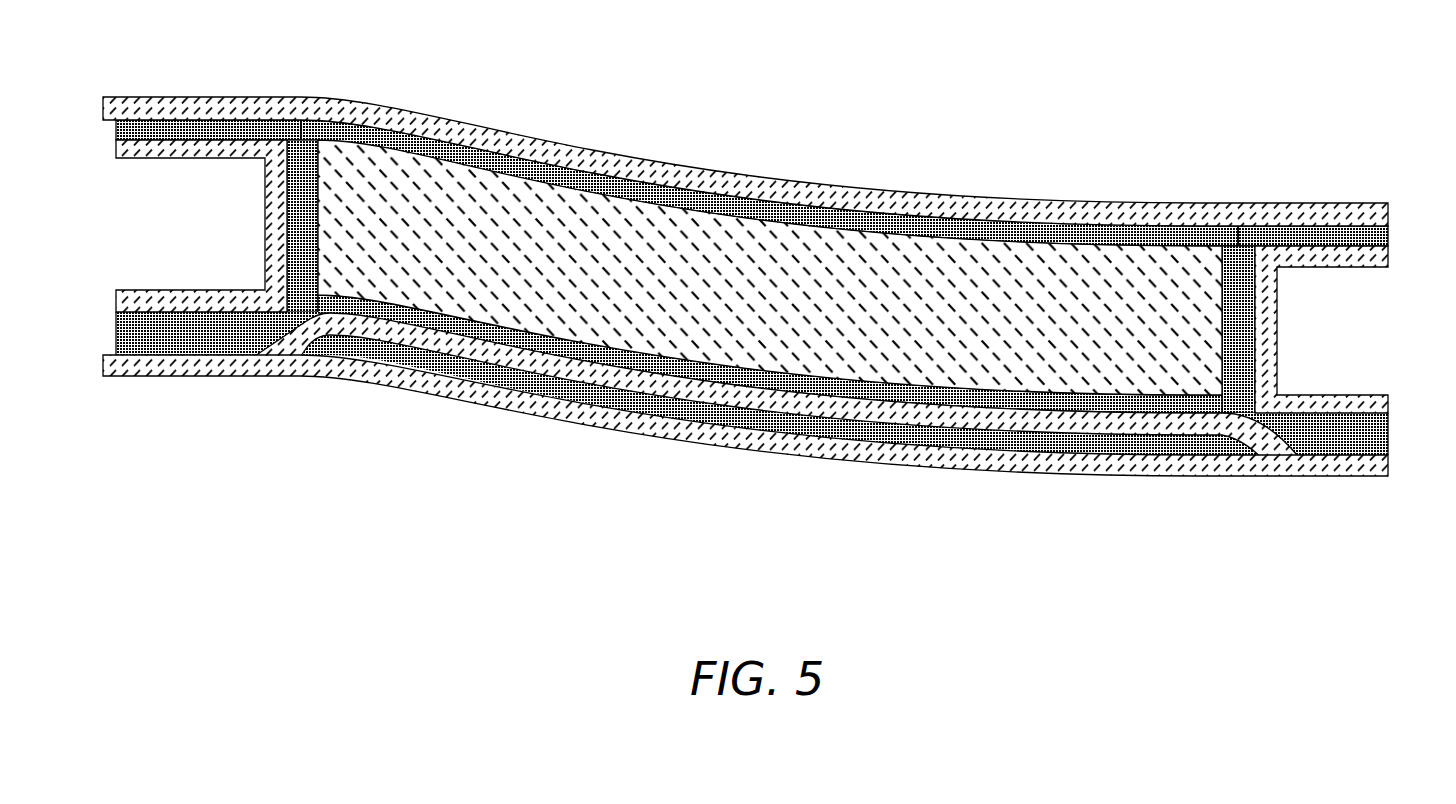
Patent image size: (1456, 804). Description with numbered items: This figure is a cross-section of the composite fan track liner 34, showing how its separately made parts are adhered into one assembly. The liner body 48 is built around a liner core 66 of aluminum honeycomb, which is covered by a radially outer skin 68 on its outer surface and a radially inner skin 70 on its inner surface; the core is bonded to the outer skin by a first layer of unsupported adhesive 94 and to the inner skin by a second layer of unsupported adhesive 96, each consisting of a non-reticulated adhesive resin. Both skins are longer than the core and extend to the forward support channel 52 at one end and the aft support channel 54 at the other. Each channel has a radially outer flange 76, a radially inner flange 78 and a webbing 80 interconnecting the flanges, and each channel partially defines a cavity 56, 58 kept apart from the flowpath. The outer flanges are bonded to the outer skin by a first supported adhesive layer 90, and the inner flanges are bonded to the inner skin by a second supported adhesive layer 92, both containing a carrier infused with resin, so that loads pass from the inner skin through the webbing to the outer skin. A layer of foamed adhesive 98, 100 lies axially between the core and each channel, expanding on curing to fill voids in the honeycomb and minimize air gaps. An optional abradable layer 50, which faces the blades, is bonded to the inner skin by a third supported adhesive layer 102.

The fan track liner 34 is at (834, 105).
The liner body 48 is at (1082, 180).
The abradable layer 50 is at (1070, 463).
The forward support channel 52 is at (267, 130).
The aft support channel 54 is at (1278, 250).
The cavity 56 is at (150, 220).
The cavity 58 is at (1350, 333).
The liner core 66 is at (992, 282).
The radially outer skin 68 is at (882, 203).
The radially inner skin 70 is at (948, 428).
The radially outer flange 76 is at (167, 143).
The radially inner flange 78 is at (188, 302).
The webbing 80 is at (278, 228).
The first supported adhesive layer 90 is at (203, 128).
The second supported adhesive layer 92 is at (193, 340).
The first layer of unsupported adhesive 94 is at (715, 205).
The second layer of unsupported adhesive 96 is at (517, 342).
The foamed adhesive layer 98 is at (293, 173).
The foamed adhesive layer 100 is at (1243, 280).
The third supported adhesive layer 102 is at (742, 422).